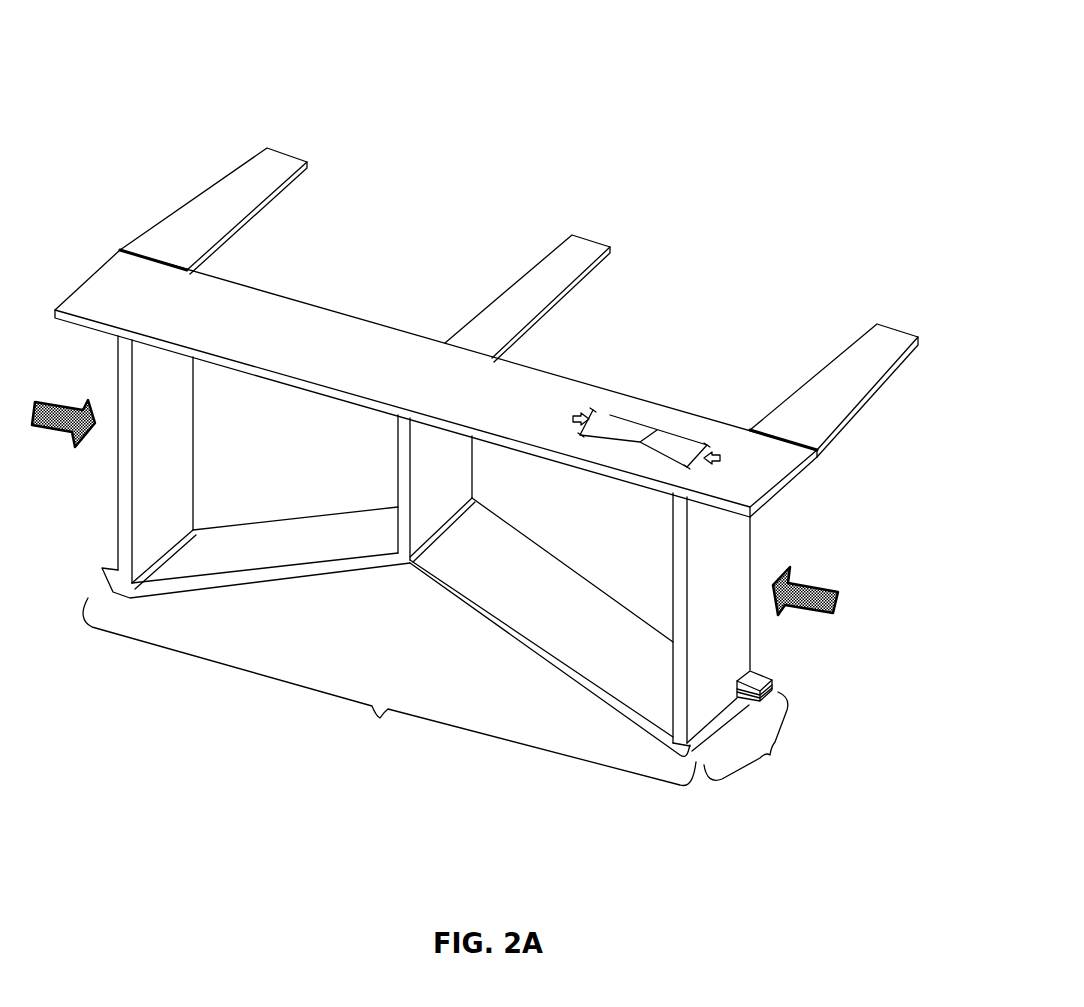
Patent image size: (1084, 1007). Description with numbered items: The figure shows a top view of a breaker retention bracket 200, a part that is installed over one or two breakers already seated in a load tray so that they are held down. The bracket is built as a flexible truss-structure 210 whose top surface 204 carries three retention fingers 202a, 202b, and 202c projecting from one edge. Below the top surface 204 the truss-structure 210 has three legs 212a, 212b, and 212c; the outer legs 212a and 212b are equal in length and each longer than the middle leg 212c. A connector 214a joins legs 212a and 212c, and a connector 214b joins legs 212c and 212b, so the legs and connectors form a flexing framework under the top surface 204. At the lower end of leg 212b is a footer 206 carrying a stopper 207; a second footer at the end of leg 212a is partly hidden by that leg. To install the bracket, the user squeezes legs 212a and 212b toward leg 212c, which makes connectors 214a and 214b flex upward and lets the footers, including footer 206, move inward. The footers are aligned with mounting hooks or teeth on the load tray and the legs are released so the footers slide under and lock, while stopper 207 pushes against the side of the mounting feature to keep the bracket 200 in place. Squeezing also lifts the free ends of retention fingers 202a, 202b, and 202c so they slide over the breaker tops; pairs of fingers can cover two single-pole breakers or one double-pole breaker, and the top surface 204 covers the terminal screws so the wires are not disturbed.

The breaker retention bracket 200 is at (192, 42).
The retention finger 202a is at (290, 150).
The retention finger 202b is at (592, 240).
The retention finger 202c is at (893, 330).
The top surface 204 is at (783, 470).
The footer 206 is at (753, 747).
The stopper 207 is at (772, 675).
The flexible truss-structure 210 is at (389, 692).
The leg 212a is at (192, 450).
The leg 212b is at (680, 567).
The leg 212c is at (462, 470).
The connector 214a is at (302, 557).
The connector 214b is at (510, 612).